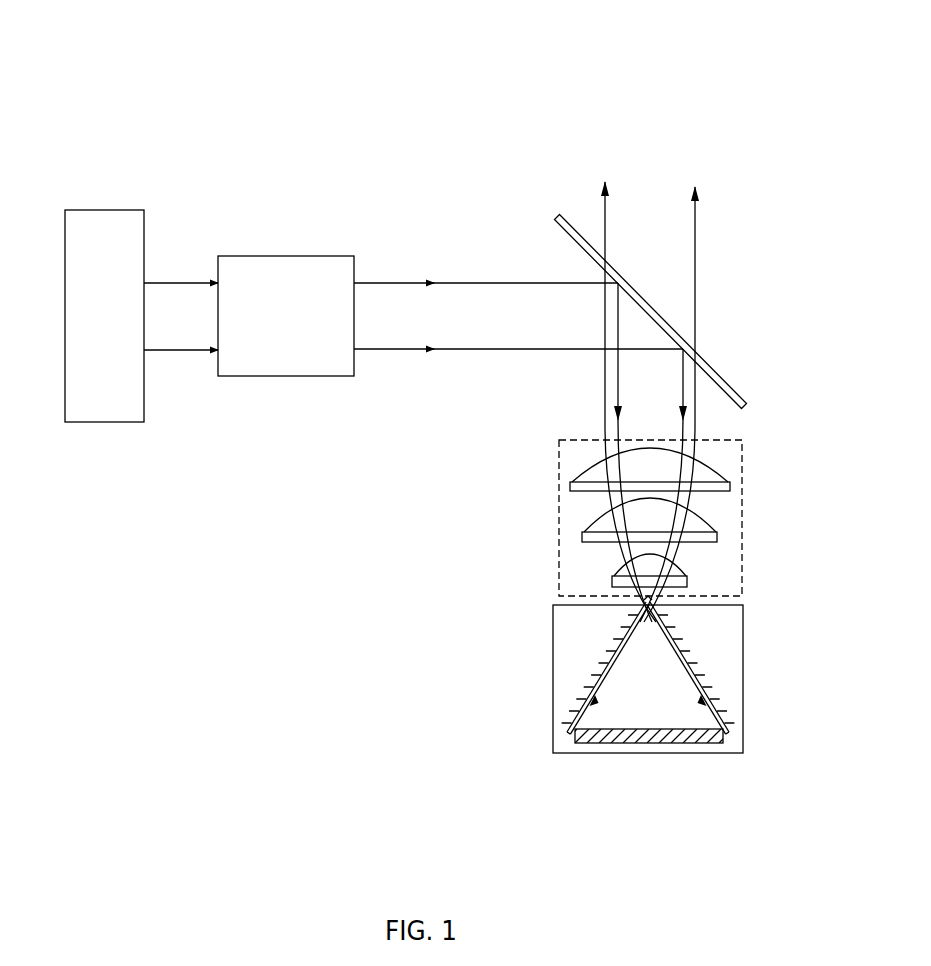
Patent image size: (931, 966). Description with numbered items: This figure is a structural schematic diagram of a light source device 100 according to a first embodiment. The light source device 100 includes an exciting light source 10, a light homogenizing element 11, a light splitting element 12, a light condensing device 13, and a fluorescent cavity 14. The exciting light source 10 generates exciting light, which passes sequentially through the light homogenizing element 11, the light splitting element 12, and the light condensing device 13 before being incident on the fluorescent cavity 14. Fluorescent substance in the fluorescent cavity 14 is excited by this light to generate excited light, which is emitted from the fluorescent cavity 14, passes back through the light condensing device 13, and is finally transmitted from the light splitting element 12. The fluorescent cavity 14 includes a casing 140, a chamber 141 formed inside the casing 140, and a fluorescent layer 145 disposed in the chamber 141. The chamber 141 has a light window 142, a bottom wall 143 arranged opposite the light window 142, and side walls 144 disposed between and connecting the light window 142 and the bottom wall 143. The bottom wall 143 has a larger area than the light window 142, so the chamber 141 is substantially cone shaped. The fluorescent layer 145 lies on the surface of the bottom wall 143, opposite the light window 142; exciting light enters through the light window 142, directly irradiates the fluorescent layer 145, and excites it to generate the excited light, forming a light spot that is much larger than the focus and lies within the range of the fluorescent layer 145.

The light source device 100 is at (473, 50).
The exciting light source 10 is at (90, 222).
The light homogenizing element 11 is at (270, 268).
The light splitting element 12 is at (710, 363).
The light condensing device 13 is at (575, 440).
The fluorescent cavity 14 is at (638, 706).
The casing 140 is at (722, 643).
The chamber 141 is at (635, 722).
The light window 142 is at (644, 605).
The bottom wall 143 is at (597, 744).
The side walls 144 is at (607, 662).
The fluorescent layer 145 is at (700, 742).